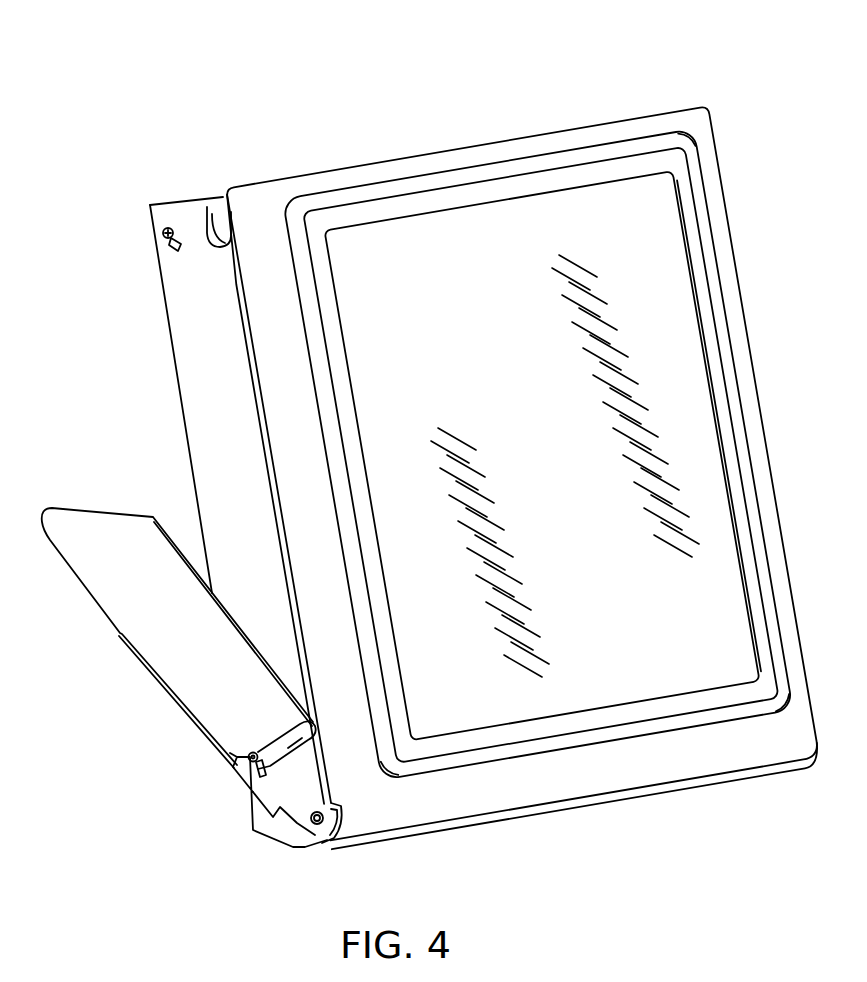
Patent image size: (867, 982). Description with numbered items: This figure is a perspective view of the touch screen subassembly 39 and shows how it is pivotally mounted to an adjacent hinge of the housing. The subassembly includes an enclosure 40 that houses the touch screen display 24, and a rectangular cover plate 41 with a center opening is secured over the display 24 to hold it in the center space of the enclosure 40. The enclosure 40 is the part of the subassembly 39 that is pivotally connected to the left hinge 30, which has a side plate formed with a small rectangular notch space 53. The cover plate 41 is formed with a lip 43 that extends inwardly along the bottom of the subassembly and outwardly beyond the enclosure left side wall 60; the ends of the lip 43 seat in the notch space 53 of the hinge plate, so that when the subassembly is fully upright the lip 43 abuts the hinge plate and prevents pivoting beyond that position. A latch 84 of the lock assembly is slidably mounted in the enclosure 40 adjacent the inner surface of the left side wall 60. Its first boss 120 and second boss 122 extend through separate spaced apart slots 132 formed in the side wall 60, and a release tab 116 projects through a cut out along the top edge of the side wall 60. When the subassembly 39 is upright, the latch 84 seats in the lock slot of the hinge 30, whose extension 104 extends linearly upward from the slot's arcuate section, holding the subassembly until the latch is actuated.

The touch screen subassembly 39 is at (738, 76).
The enclosure 40 is at (173, 199).
The cover plate 41 is at (497, 806).
The touch screen display 24 is at (645, 253).
The enclosure left side wall 60 is at (245, 455).
The release tab 116 is at (218, 250).
The second boss 122 is at (164, 230).
The slots 132 is at (168, 247).
The left hinge 30 is at (142, 582).
The latch 84 is at (273, 752).
The first boss 120 is at (243, 754).
The extension 104 is at (255, 794).
The notch space 53 is at (297, 823).
The lip 43 is at (312, 846).